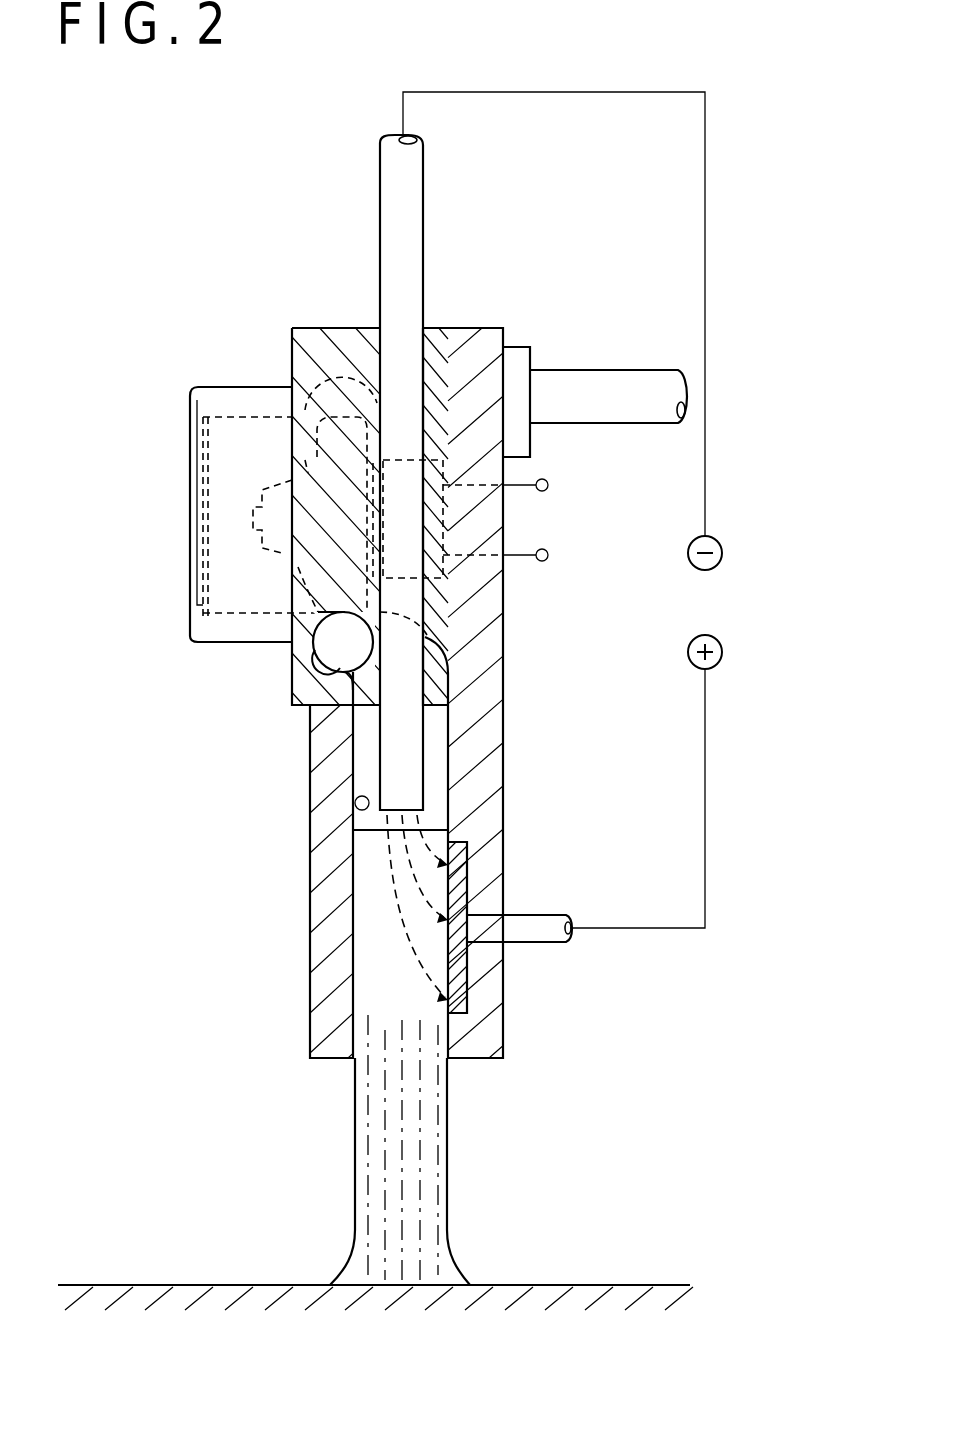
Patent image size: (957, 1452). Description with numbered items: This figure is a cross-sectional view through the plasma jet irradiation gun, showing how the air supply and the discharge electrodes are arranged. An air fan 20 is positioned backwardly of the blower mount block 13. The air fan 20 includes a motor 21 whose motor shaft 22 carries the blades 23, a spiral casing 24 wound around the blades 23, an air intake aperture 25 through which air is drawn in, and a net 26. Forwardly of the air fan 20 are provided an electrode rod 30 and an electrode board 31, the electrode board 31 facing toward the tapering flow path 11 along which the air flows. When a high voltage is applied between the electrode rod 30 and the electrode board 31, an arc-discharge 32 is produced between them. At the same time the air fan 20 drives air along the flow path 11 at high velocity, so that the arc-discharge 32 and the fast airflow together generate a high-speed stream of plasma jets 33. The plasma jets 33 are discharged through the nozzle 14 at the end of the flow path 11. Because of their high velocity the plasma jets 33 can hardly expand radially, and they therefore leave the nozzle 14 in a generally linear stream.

The tapering flow path 11 is at (355, 810).
The blower mount block 13 is at (313, 328).
The nozzle 14 is at (336, 1058).
The air fan 20 is at (213, 327).
The motor 21 is at (427, 460).
The motor shaft 22 is at (255, 520).
The blades 23 is at (277, 553).
The spiral casing 24 is at (343, 672).
The air intake aperture 25 is at (190, 603).
The net 26 is at (202, 523).
The electrode rod 30 is at (380, 200).
The electrode board 31 is at (462, 983).
The arc-discharge 32 is at (400, 930).
The plasma jets 33 is at (355, 1170).